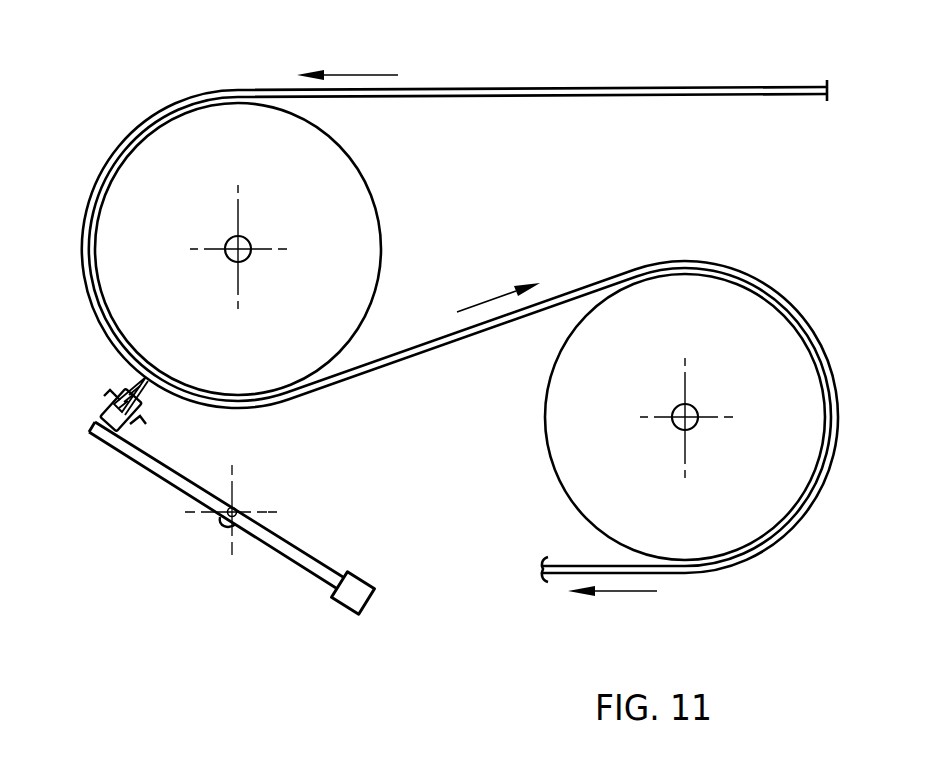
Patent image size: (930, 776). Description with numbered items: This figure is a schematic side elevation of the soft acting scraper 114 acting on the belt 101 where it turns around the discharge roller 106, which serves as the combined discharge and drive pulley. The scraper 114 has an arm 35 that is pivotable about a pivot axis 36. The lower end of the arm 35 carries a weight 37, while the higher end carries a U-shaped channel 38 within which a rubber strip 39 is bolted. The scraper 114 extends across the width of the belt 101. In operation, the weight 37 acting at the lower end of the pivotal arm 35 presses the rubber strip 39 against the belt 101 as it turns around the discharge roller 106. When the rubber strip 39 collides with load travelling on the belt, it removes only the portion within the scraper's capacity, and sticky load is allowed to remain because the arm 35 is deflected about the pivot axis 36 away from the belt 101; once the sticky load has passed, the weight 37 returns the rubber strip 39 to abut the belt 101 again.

The belt 101 is at (576, 89).
The discharge roller 106 is at (365, 238).
The rubber strip 39 is at (142, 380).
The U-shaped channel 38 is at (100, 407).
The arm 35 is at (310, 547).
The pivot axis 36 is at (242, 521).
The weight 37 is at (368, 605).
The soft acting scraper 114 is at (158, 556).